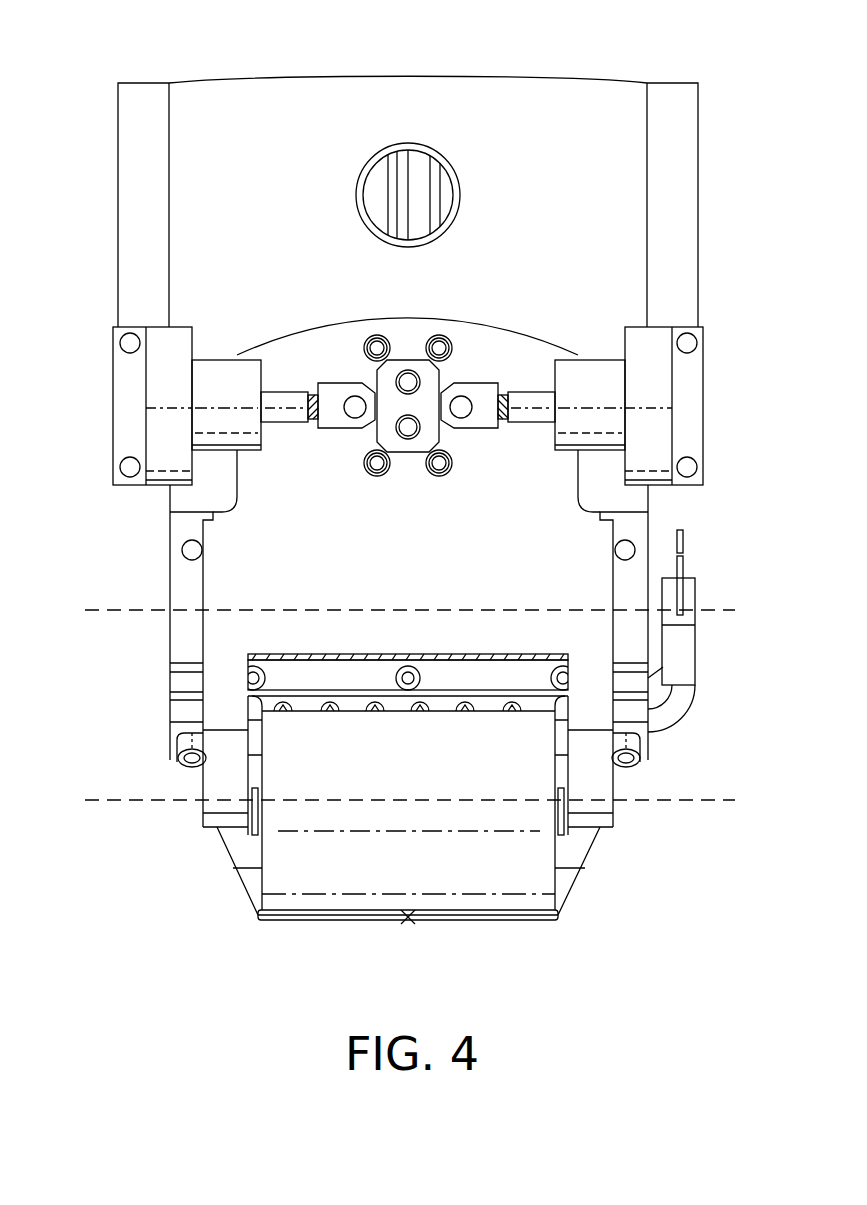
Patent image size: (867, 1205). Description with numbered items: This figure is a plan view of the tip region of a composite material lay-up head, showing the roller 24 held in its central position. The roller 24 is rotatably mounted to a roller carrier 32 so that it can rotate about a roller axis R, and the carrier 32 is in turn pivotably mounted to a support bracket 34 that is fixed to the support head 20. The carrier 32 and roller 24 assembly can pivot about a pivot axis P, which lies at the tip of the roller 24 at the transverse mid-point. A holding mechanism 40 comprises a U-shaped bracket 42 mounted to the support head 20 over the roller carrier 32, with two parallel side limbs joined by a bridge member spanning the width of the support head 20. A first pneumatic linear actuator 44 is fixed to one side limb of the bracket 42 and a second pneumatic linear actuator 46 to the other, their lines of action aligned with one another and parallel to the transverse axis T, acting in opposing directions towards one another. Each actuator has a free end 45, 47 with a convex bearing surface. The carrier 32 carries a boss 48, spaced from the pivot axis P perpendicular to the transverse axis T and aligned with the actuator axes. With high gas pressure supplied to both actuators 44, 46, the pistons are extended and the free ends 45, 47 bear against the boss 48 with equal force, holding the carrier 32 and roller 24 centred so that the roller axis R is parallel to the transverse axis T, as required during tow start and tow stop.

The support bracket 34 is at (588, 102).
The U-shaped bracket 42 is at (123, 406).
The first pneumatic linear actuator 44 is at (220, 372).
The second pneumatic linear actuator 46 is at (598, 372).
The free end 45 is at (347, 382).
The free end 47 is at (482, 382).
The boss 48 is at (410, 360).
The holding mechanism 40 is at (108, 531).
The roller carrier 32 is at (589, 561).
The support head 20 is at (655, 636).
The roller 24 is at (492, 875).
The pivot axis P is at (405, 928).
The transverse axis T is at (420, 610).
The roller axis R is at (421, 800).